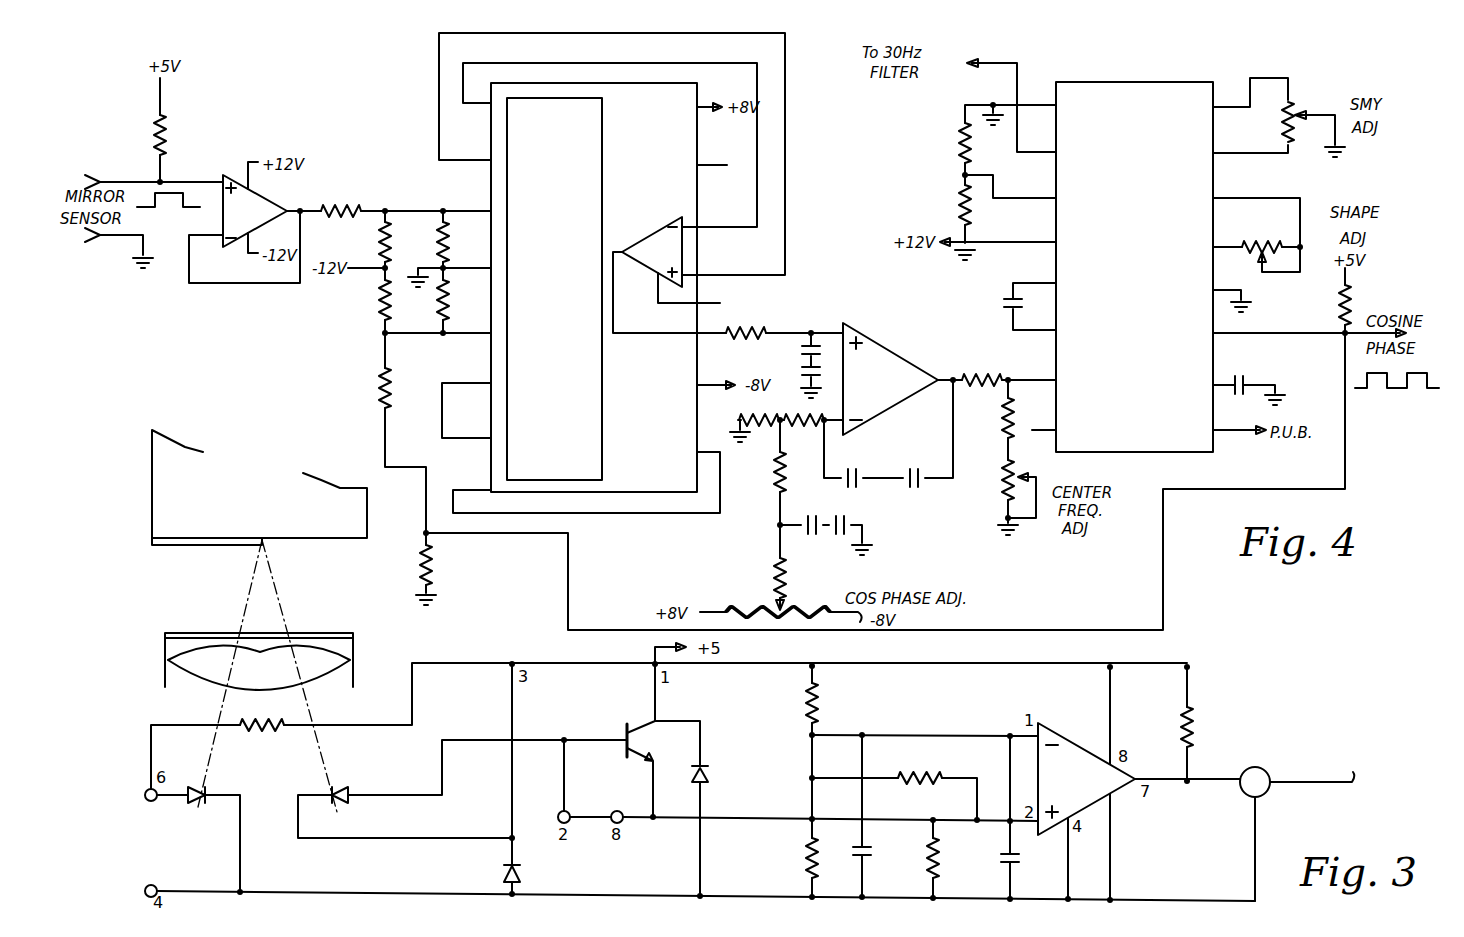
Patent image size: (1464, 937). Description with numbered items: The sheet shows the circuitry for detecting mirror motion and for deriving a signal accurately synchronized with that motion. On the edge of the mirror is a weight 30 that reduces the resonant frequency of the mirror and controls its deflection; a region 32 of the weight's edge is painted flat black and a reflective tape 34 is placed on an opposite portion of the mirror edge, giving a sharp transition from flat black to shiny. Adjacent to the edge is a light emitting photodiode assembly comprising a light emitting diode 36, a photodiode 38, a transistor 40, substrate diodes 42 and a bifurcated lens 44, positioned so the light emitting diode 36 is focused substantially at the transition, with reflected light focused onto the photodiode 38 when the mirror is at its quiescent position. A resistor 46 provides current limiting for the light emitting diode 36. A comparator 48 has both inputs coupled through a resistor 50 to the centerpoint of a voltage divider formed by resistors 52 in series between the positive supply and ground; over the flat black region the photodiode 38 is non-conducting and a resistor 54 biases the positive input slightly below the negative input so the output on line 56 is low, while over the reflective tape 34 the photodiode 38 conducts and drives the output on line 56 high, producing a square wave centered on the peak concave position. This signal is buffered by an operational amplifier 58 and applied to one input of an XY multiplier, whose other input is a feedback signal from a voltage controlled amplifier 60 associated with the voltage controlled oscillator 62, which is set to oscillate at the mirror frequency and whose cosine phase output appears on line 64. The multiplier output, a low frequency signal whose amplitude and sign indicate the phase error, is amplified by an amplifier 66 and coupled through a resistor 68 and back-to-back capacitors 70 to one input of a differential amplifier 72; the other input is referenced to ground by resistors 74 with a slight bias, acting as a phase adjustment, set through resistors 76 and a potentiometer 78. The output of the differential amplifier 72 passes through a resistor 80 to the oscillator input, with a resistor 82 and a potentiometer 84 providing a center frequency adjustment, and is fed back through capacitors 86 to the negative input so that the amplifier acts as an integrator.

In FIG. 4, the weight 30 is at (367, 515).
In FIG. 4, the flat black region 32 is at (357, 540).
In FIG. 4, the reflective tape 34 is at (205, 548).
In FIG. 3, the light emitting diode 36 is at (196, 803).
In FIG. 3, the photodiode 38 is at (334, 790).
In FIG. 3, the transistor 40 is at (648, 719).
In FIG. 3, the substrate diodes 42 is at (503, 868).
In FIG. 3, the bifurcated lens 44 is at (350, 683).
In FIG. 3, the resistor 46 is at (265, 728).
In FIG. 3, the comparator 48 is at (1080, 740).
In FIG. 3, the resistor 50 is at (926, 774).
In FIG. 3, the resistors 52 is at (816, 706).
In FIG. 3, the resistor 54 is at (942, 858).
In FIG. 4, the line 56 is at (178, 180).
In FIG. 3, the line 56 is at (1214, 782).
In FIG. 4, the operational amplifier 58 is at (226, 175).
In FIG. 4, the voltage controlled amplifier 60 is at (612, 260).
In FIG. 4, the voltage controlled oscillator 62 is at (1160, 82).
In FIG. 4, the line 64 is at (1312, 333).
In FIG. 4, the amplifier 66 is at (662, 270).
In FIG. 4, the resistor 68 is at (758, 327).
In FIG. 4, the back-to-back capacitors 70 is at (804, 348).
In FIG. 4, the differential amplifier 72 is at (892, 352).
In FIG. 4, the resistors 74 is at (758, 428).
In FIG. 4, the resistors 76 is at (776, 480).
In FIG. 4, the potentiometer 78 is at (757, 608).
In FIG. 4, the resistor 80 is at (984, 376).
In FIG. 4, the resistor 82 is at (1001, 414).
In FIG. 4, the potentiometer 84 is at (1002, 482).
In FIG. 4, the capacitors 86 is at (872, 464).